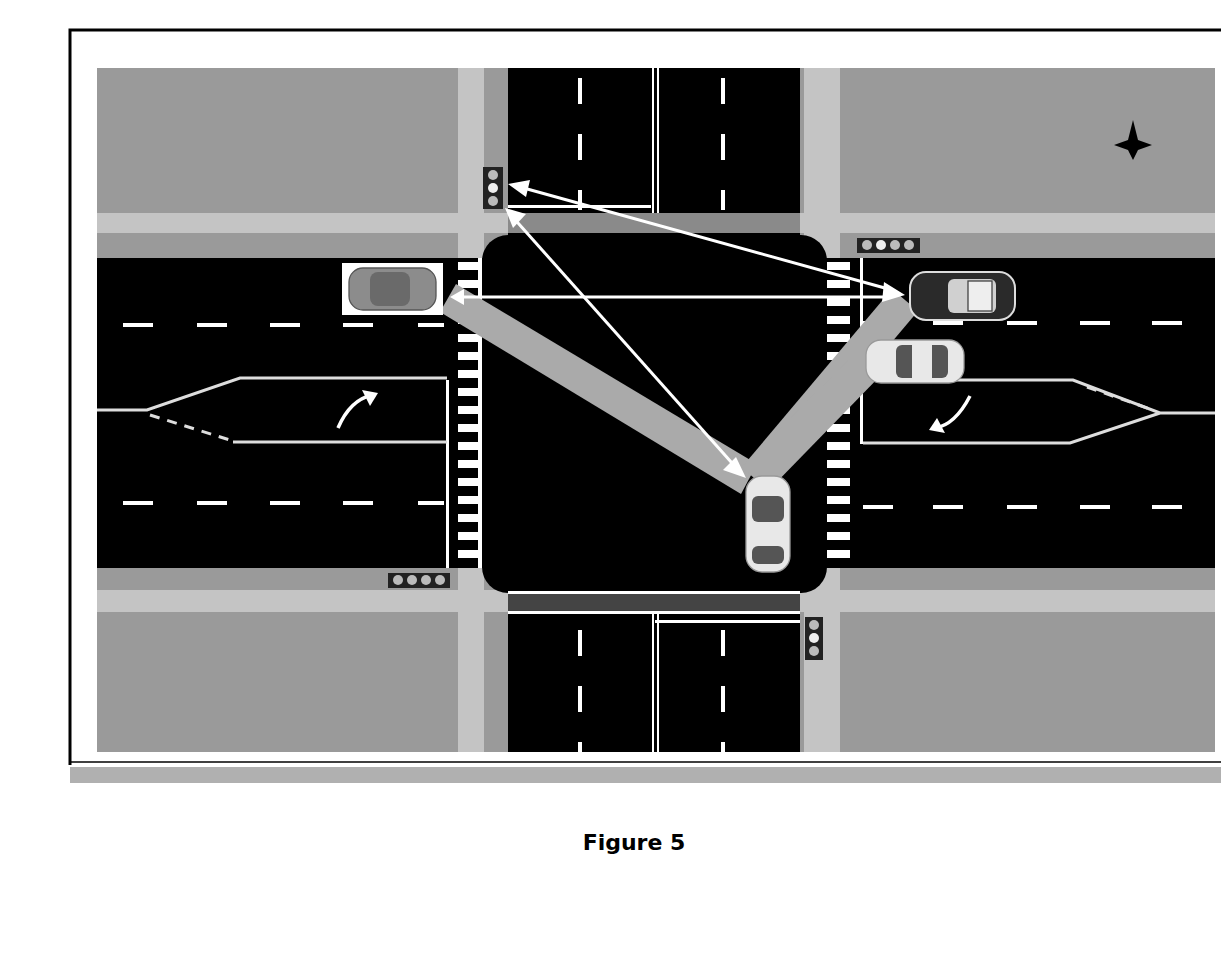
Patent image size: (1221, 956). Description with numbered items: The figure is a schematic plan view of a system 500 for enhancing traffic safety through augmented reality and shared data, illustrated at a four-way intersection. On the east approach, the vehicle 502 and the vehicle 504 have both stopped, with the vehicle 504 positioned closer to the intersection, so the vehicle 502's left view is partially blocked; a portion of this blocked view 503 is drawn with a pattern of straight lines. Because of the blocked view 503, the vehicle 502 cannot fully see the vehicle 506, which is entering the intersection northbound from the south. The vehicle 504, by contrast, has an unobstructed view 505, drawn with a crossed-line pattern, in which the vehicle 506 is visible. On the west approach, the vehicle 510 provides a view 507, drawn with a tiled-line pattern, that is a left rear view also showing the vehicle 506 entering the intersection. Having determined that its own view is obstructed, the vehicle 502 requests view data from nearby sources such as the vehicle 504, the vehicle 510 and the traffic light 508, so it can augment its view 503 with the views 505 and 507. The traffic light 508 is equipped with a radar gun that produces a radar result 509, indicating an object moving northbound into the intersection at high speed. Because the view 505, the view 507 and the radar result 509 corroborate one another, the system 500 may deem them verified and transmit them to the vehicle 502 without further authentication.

The system 500 is at (289, 124).
The vehicle 502 is at (990, 271).
The blocked view 503 is at (830, 389).
The vehicle 504 is at (915, 361).
The unobstructed view 505 is at (813, 419).
The vehicle 506 is at (768, 524).
The view 507 is at (598, 389).
The traffic light 508 is at (488, 167).
The radar result 509 is at (625, 343).
The vehicle 510 is at (392, 289).